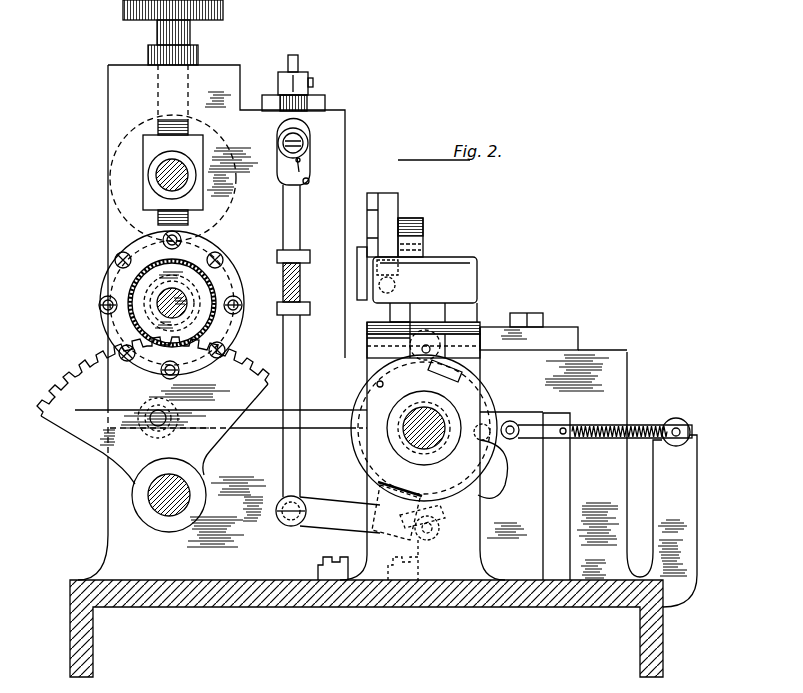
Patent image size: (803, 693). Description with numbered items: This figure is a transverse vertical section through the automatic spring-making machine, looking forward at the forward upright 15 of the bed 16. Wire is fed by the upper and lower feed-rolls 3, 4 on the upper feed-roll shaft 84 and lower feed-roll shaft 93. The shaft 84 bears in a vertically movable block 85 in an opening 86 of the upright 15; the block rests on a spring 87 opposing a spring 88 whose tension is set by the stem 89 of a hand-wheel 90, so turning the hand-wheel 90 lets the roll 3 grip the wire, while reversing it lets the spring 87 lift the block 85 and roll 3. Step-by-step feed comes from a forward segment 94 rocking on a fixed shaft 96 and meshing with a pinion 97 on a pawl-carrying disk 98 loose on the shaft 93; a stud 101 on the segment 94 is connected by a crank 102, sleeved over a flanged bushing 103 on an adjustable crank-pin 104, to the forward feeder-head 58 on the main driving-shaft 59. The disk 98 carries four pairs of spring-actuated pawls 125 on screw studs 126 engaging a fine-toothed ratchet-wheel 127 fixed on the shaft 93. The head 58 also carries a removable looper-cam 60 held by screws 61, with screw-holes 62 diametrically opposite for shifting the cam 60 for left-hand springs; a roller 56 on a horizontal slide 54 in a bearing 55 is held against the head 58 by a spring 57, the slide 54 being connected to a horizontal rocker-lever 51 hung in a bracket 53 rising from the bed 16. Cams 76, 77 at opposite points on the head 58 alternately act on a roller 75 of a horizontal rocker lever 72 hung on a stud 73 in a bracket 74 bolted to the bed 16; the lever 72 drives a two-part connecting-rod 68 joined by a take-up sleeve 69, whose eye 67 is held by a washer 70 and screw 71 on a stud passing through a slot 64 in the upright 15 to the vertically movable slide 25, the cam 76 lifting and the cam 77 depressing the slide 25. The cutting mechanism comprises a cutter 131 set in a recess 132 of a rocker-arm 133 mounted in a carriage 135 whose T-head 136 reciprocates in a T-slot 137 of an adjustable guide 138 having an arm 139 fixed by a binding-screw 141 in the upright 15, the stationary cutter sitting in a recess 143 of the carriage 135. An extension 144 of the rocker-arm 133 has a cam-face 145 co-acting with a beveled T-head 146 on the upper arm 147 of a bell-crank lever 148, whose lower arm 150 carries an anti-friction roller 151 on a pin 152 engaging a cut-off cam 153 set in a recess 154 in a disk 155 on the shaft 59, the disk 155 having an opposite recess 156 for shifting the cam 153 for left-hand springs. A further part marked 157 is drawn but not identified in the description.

The upper feed-roll 3 is at (223, 131).
The lower feed-roll 4 is at (232, 278).
The forward upright 15 is at (108, 98).
The machine-frame or bed 16 is at (398, 602).
The vertically movable slide 25 is at (326, 103).
The horizontal rocker-lever 51 is at (677, 446).
The bracket 53 is at (662, 479).
The horizontal slide 54 is at (603, 424).
The bearing 55 is at (556, 496).
The roller 56 is at (517, 423).
The spring 57 is at (606, 440).
The forward feeder-head 58 is at (474, 411).
The main driving-shaft 59 is at (444, 452).
The looper-cam 60 is at (499, 481).
The screws 61 is at (478, 441).
The screw-holes 62 is at (376, 385).
The slot 64 is at (309, 181).
The eye 67 is at (301, 165).
The two-part connecting-rod 68 is at (301, 228).
The take-up sleeve 69 is at (310, 286).
The washer 70 is at (307, 138).
The screw 71 is at (303, 145).
The horizontal rocker lever 72 is at (353, 518).
The stud 73 is at (357, 531).
The bracket 74 is at (350, 556).
The roller 75 is at (434, 541).
The cam 76 is at (488, 330).
The cam 77 is at (438, 514).
The upper feed-roll shaft 84 is at (156, 175).
The vertically movable block 85 is at (143, 156).
The opening 86 is at (157, 215).
The spring 87 is at (125, 238).
The spring 88 is at (157, 127).
The stem 89 is at (157, 90).
The hand-wheel 90 is at (224, 8).
The lower feed-roll shaft 93 is at (156, 312).
The forward segment 94 is at (153, 410).
The fixed shaft 96 is at (150, 500).
The pinion 97 is at (148, 303).
The pawl-carrying disk 98 is at (228, 260).
The stud 101 is at (157, 421).
The crank 102 is at (277, 420).
The flanged bushing 103 is at (407, 434).
The adjustable crank-pin 104 is at (412, 448).
The spring-actuated pawls 125 is at (110, 292).
The screw studs 126 is at (100, 303).
The fine-toothed ratchet-wheel 127 is at (116, 260).
The cutter 131 is at (373, 222).
The recess 132 is at (388, 218).
The rocker-arm 133 is at (408, 209).
The carriage 135 is at (424, 239).
The T-head 136 is at (367, 323).
The T-slot 137 is at (392, 314).
The adjustable guide 138 is at (456, 322).
The arm 139 is at (500, 329).
The binding-screw 141 is at (540, 318).
The recess 143 is at (300, 281).
The extension 144 is at (420, 261).
The cam-face 145 is at (437, 258).
The beveled T-head 146 is at (425, 280).
The upper arm 147 is at (427, 316).
The bell-crank lever 148 is at (440, 310).
The lower arm 150 is at (423, 349).
The anti-friction roller 151 is at (366, 358).
The pin 152 is at (366, 380).
The cut-off cam 153 is at (455, 345).
The recess 154 is at (440, 372).
The disk 155 is at (462, 421).
The recess 156 is at (416, 493).
The pin 157 is at (395, 286).